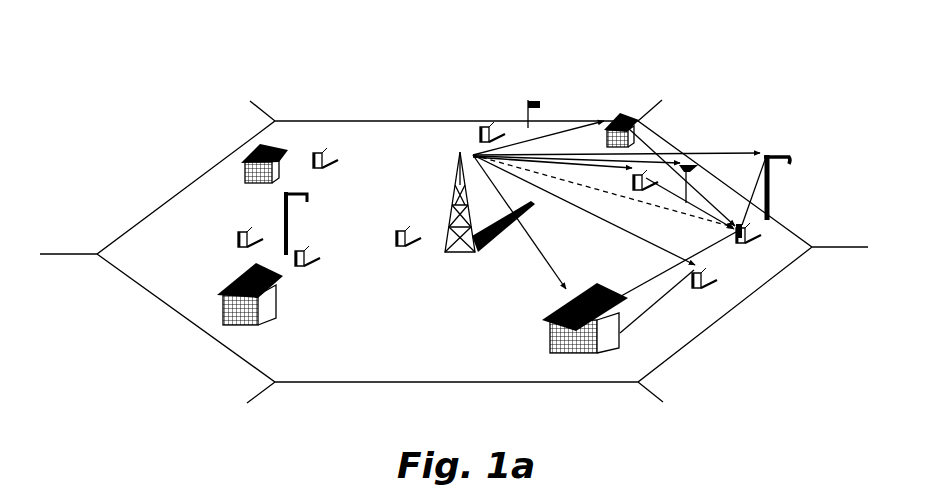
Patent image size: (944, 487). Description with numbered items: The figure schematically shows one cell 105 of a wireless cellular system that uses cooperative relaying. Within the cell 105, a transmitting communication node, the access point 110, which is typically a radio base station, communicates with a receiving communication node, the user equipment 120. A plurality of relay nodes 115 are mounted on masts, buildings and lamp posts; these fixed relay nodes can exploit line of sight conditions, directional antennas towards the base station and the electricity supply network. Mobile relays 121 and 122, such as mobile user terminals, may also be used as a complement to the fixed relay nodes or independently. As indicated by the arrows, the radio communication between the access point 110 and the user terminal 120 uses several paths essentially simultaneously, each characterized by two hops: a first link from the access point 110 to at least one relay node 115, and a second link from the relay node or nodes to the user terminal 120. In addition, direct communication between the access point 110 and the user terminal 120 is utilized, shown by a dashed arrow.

The cell 105 is at (341, 92).
The access point 110 is at (460, 150).
The relay nodes 115 is at (608, 114).
The user equipment 120 is at (761, 247).
The mobile relay 121 is at (696, 296).
The mobile relay 122 is at (641, 168).